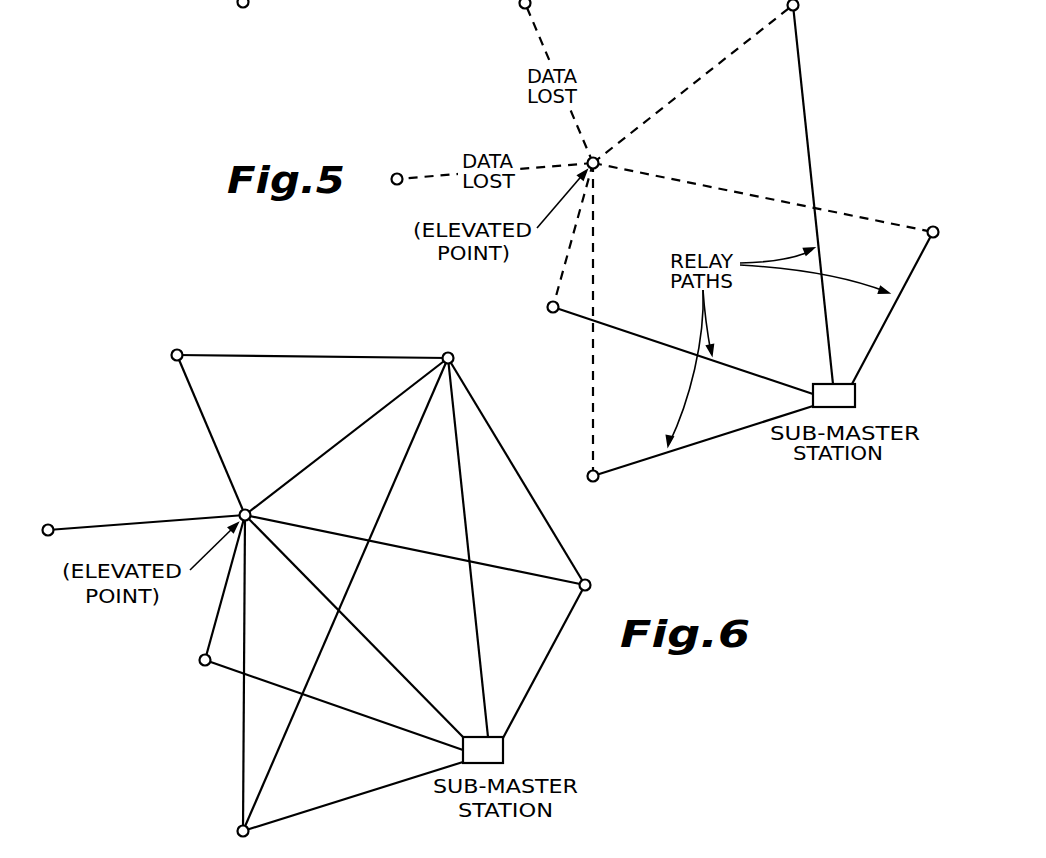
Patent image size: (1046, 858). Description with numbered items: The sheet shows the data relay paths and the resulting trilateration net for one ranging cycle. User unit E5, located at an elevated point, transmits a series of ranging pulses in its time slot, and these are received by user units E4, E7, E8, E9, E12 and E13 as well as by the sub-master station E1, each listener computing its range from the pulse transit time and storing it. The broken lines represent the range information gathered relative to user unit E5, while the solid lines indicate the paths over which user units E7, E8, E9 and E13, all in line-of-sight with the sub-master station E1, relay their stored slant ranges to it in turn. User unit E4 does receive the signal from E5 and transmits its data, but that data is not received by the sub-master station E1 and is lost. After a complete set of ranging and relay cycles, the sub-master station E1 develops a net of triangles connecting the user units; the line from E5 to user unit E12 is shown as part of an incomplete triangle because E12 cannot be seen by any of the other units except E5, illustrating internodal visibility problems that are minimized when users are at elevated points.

In FIG. 5, the sub-master station E1 is at (852, 395).
In FIG. 6, the sub-master station E1 is at (500, 750).
In FIG. 5, the user unit E4 is at (510, 5).
In FIG. 6, the user unit E4 is at (161, 355).
In FIG. 5, the user unit E5 is at (577, 154).
In FIG. 6, the user unit E5 is at (229, 508).
In FIG. 5, the user unit E7 is at (403, 242).
In FIG. 6, the user unit E7 is at (225, 830).
In FIG. 5, the user unit E8 is at (811, 9).
In FIG. 6, the user unit E8 is at (464, 360).
In FIG. 5, the user unit E9 is at (927, 219).
In FIG. 6, the user unit E9 is at (602, 587).
In FIG. 5, the user unit E12 is at (396, 196).
In FIG. 6, the user unit E12 is at (49, 545).
In FIG. 5, the user unit E13 is at (554, 321).
In FIG. 6, the user unit E13 is at (185, 660).